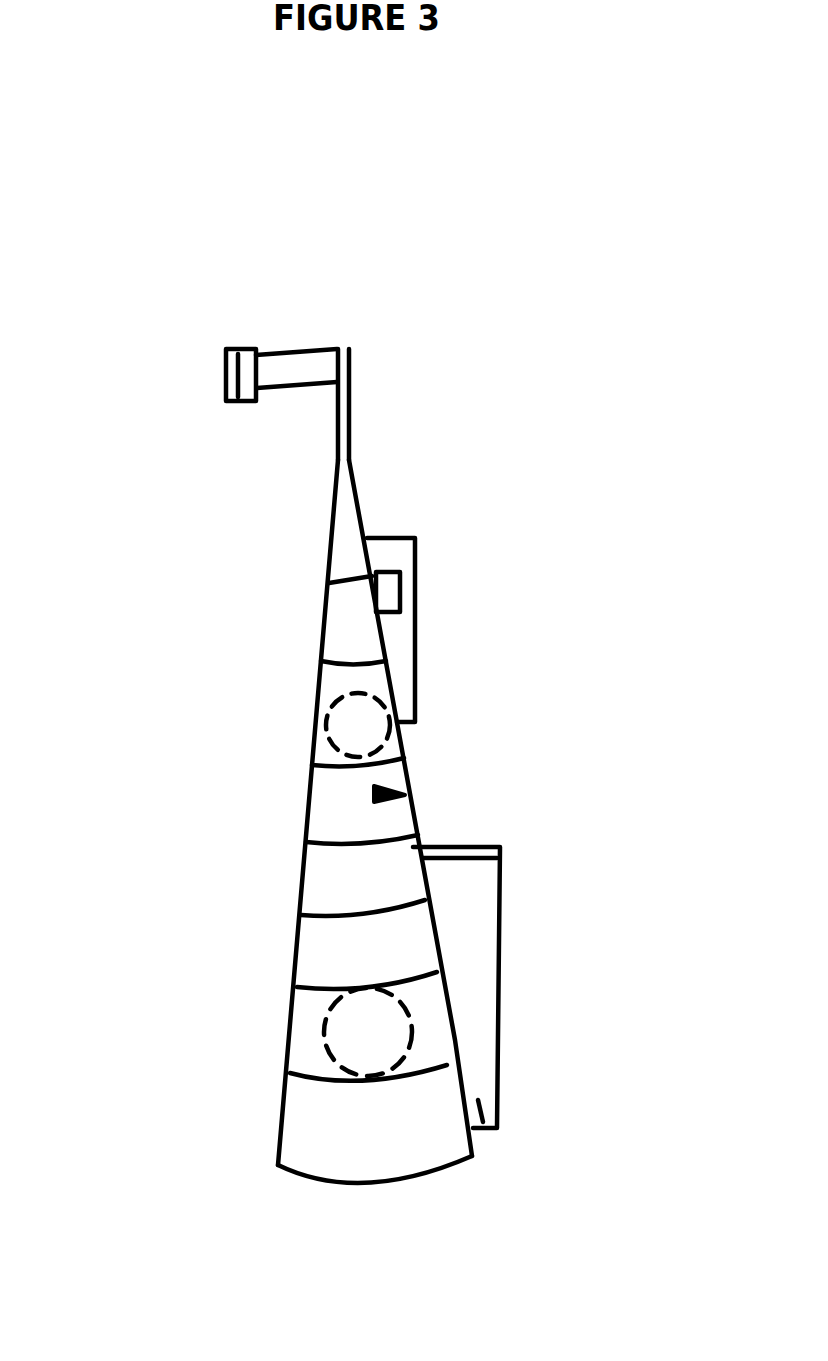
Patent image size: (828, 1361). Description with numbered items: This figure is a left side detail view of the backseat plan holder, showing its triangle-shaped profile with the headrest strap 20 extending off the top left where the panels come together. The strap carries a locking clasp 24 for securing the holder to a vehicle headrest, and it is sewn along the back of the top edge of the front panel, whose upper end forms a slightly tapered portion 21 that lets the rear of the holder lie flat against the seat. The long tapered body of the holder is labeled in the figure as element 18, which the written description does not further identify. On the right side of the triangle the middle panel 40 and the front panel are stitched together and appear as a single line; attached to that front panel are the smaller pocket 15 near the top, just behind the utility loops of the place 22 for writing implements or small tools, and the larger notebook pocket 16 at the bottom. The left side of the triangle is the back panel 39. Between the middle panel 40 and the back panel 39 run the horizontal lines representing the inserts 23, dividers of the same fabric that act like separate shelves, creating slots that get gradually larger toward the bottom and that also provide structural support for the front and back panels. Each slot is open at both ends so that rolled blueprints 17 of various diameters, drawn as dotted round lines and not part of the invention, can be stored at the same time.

The pocket 15 is at (416, 632).
The notebook pocket 16 is at (478, 918).
The blueprints 17 is at (362, 736).
The conical body 18 is at (331, 532).
The headrest strap 20 is at (335, 349).
The tapered portion 21 is at (352, 457).
The place for writing implements 22 is at (400, 586).
The inserts 23 is at (425, 1073).
The locking clasp 24 is at (224, 357).
The back panel 39 is at (303, 871).
The middle panel 40 is at (385, 793).